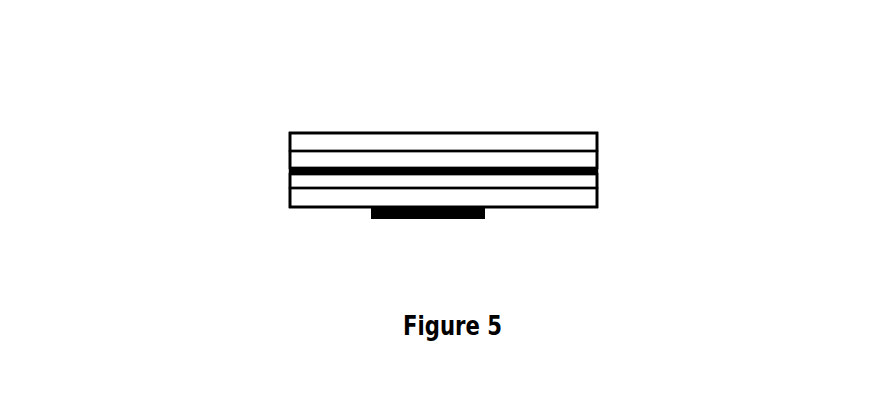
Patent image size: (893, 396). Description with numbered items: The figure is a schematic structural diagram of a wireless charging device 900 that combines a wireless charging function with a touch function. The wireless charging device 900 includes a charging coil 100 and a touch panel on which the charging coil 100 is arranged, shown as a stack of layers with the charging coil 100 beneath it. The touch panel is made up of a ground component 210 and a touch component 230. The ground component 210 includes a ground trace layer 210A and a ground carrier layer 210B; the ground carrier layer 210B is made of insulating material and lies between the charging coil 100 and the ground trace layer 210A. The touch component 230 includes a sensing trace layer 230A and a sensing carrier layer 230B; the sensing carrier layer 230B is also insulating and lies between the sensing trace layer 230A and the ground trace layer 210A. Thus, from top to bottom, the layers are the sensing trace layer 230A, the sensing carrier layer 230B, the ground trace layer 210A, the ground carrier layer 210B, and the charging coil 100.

The wireless charging device 900 is at (458, 122).
The touch component 230 is at (738, 78).
The sensing trace layer 230A is at (510, 113).
The sensing carrier layer 230B is at (511, 142).
The ground component 210 is at (152, 115).
The ground trace layer 210A is at (377, 151).
The ground carrier layer 210B is at (377, 179).
The charging coil 100 is at (475, 238).